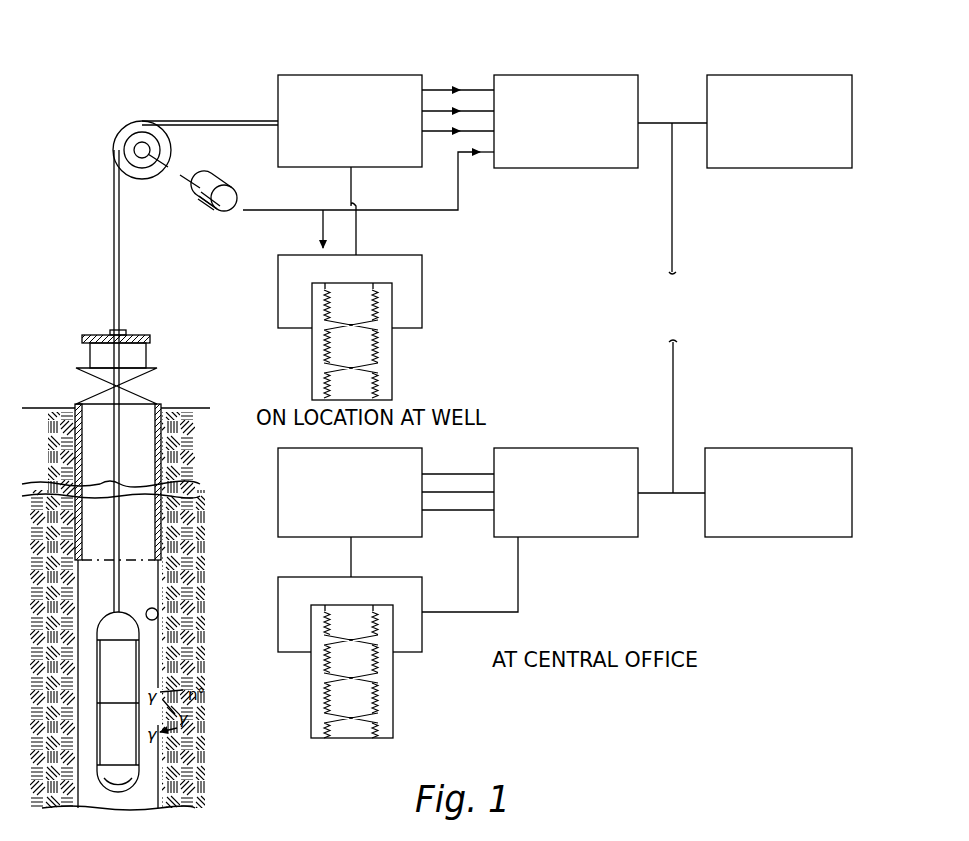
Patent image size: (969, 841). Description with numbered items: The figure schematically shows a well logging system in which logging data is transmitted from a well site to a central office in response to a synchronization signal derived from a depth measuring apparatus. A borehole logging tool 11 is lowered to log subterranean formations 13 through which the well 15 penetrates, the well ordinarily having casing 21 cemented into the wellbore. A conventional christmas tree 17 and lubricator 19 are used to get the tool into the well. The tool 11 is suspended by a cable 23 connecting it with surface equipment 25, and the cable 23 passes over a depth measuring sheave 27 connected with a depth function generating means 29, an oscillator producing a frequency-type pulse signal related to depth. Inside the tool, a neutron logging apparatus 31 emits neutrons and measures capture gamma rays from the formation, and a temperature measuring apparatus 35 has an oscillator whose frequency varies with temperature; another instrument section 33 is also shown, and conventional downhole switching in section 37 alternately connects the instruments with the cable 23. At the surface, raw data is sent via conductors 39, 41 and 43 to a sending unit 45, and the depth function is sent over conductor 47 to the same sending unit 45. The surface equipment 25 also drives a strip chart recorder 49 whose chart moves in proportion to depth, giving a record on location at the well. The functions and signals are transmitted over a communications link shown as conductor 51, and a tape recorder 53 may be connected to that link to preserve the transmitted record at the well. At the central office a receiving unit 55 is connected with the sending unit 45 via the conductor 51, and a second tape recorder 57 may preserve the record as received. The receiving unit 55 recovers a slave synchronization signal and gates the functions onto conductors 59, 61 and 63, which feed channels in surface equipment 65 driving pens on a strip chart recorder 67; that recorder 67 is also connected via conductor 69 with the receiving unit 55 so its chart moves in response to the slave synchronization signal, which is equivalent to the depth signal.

The borehole logging tool 11 is at (130, 790).
The subterranean formations 13 is at (195, 673).
The well 15 is at (160, 619).
The christmas tree 17 is at (90, 380).
The lubricator 19 is at (90, 355).
The casing 21 is at (78, 535).
The cable 23 is at (125, 545).
The surface equipment 25 is at (322, 75).
The depth measuring sheave 27 is at (132, 125).
The depth function generating means 29 is at (218, 185).
The neutron logging apparatus 31 is at (110, 676).
The tool section 33 is at (105, 742).
The temperature measuring apparatus 35 is at (113, 788).
The section of tool 37 is at (123, 622).
The conductor 39 is at (435, 88).
The conductor 41 is at (470, 109).
The conductor 43 is at (443, 133).
The sending unit 45 is at (580, 78).
The conductor 47 is at (460, 197).
The strip chart recorder 49 is at (278, 291).
The conductor 51 is at (660, 120).
The tape recorder 53 is at (800, 85).
The receiving unit 55 is at (566, 447).
The tape recorder 57 is at (767, 447).
The conductor 59 is at (439, 473).
The conductor 61 is at (466, 491).
The conductor 63 is at (458, 512).
The surface equipment 65 is at (278, 489).
The strip chart recorder 67 is at (422, 590).
The conductor 69 is at (518, 592).